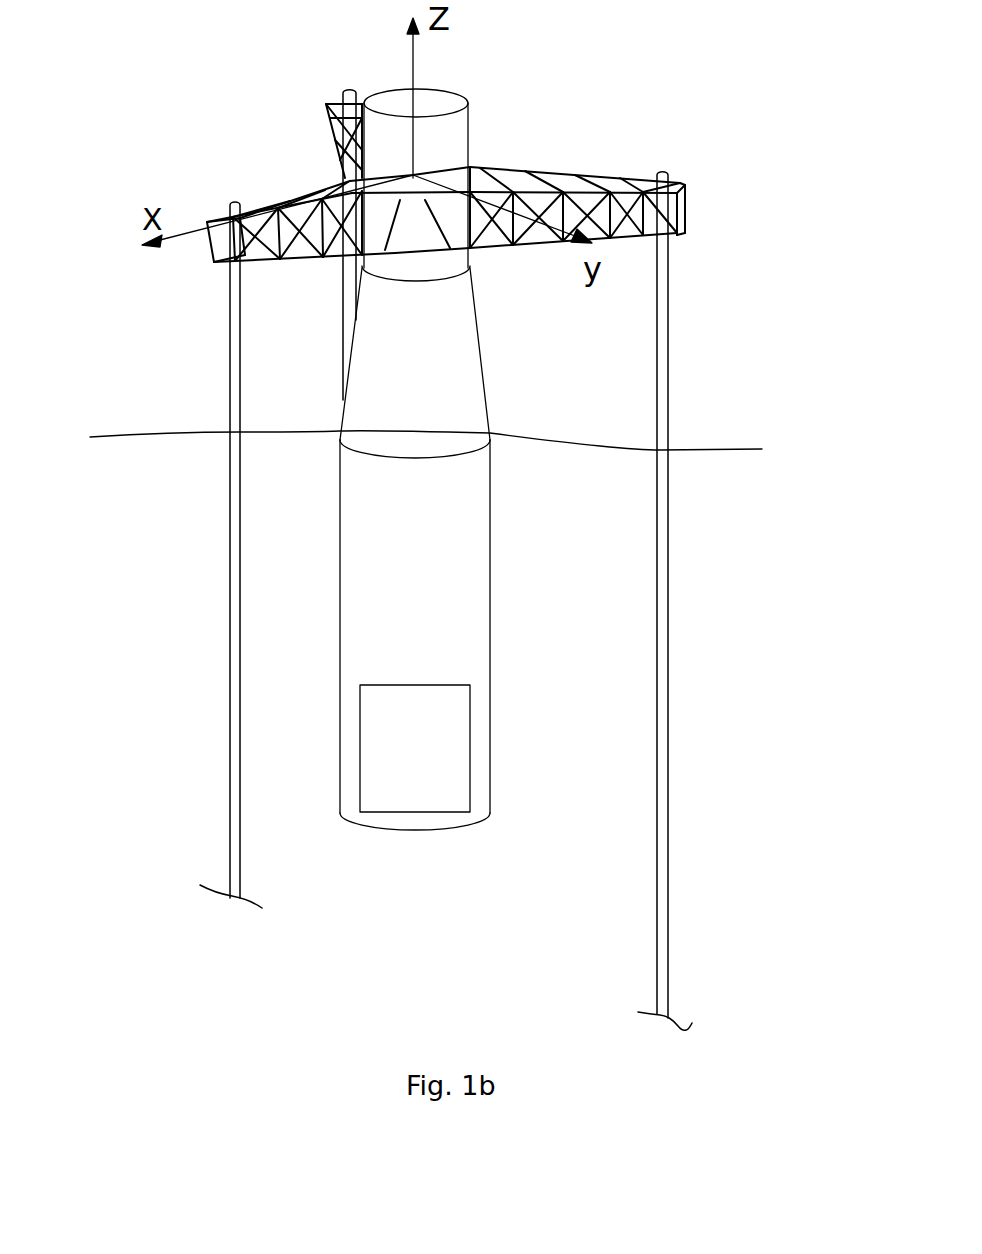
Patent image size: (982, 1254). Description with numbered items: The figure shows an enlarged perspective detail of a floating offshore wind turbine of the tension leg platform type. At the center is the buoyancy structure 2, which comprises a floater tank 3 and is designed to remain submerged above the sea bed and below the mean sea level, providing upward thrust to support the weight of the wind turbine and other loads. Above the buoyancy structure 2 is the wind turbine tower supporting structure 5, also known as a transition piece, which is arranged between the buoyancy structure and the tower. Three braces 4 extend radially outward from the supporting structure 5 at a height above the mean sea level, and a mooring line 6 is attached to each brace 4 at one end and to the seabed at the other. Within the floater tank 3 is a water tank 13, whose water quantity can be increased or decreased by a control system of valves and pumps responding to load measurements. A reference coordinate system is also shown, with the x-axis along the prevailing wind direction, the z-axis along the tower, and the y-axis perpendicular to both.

The buoyancy structure 2 is at (305, 707).
The floater tank 3 is at (438, 650).
The brace 4 is at (337, 130).
The wind turbine tower supporting structure 5 is at (452, 142).
The mooring line 6 is at (345, 297).
The water tank 13 is at (415, 767).